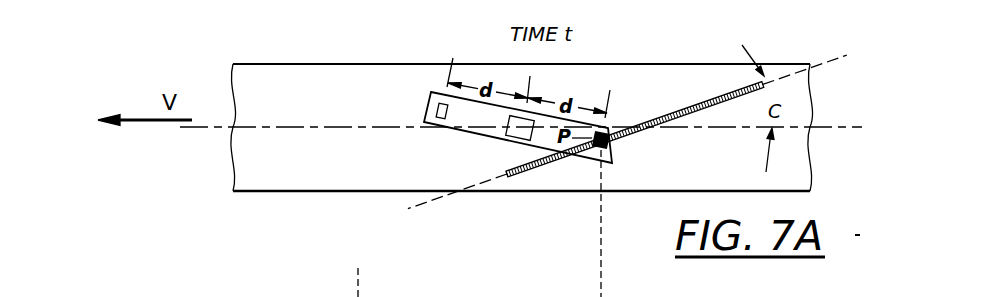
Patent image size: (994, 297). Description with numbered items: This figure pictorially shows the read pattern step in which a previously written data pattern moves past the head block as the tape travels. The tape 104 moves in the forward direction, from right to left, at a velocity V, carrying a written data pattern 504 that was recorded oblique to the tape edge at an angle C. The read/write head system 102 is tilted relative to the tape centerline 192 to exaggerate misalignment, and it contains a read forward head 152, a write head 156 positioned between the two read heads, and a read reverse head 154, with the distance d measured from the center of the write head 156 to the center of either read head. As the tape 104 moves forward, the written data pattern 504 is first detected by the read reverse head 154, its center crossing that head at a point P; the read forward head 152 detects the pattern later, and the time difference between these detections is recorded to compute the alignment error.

The tape 104 is at (263, 78).
The read/write head system 102 is at (478, 123).
The read forward head 152 is at (436, 128).
The write head 156 is at (514, 140).
The read reverse head 154 is at (622, 143).
The written data pattern 504 is at (707, 100).
The tape centerline 192 is at (852, 127).